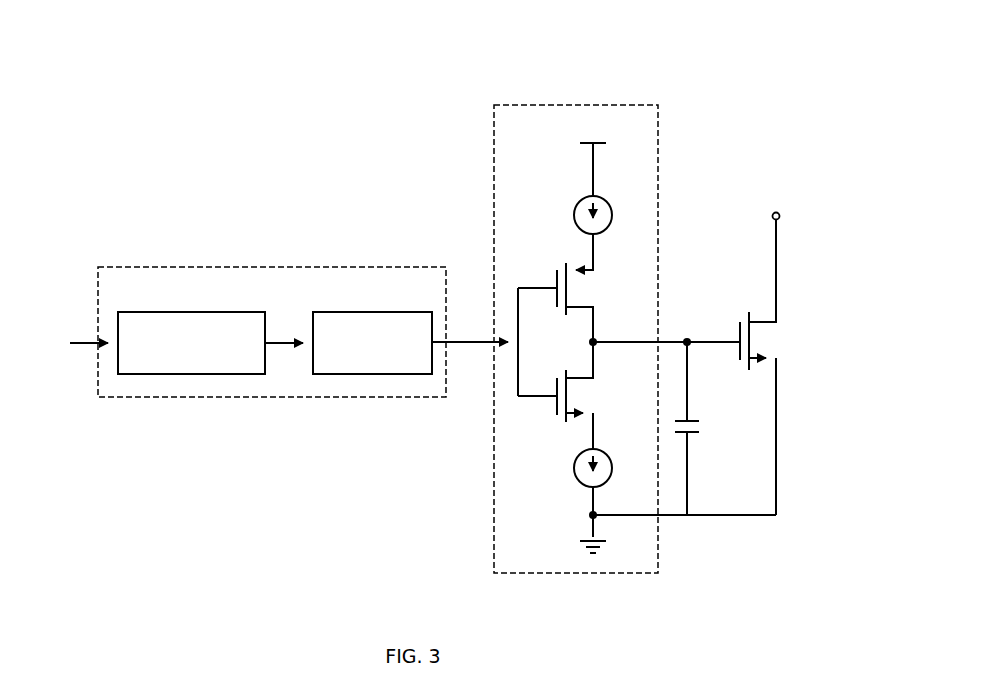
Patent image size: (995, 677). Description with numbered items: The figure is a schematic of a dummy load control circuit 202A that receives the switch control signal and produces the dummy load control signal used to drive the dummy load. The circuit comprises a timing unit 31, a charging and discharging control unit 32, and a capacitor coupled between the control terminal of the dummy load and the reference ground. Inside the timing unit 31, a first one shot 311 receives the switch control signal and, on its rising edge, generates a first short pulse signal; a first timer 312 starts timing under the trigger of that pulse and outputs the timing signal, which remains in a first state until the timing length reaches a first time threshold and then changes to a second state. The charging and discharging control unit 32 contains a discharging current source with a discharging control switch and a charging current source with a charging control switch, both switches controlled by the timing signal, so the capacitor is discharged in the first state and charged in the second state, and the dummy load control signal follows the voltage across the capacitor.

The dummy load control circuit 202A is at (612, 62).
The timing unit 31 is at (255, 267).
The first one shot 311 is at (182, 312).
The first timer 312 is at (363, 312).
The charging and discharging control unit 32 is at (658, 133).